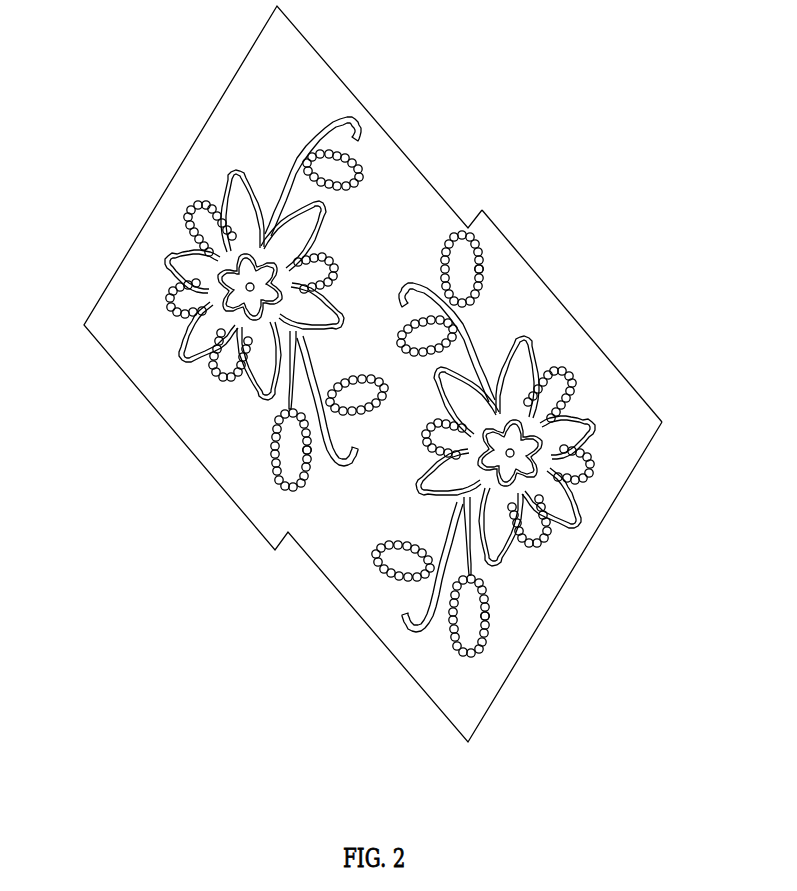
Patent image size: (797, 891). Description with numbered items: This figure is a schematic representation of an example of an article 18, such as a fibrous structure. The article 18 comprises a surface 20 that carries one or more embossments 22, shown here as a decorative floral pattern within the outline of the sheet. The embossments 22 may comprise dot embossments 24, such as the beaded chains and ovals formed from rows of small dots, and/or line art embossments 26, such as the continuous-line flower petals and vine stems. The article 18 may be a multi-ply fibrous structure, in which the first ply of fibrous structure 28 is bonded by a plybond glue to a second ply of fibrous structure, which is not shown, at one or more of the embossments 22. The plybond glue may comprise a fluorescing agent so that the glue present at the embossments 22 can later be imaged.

The article 18 is at (523, 67).
The surface 20 is at (407, 251).
The embossments 22 is at (535, 345).
The dot embossments 24 is at (273, 463).
The line art embossments 26 is at (187, 335).
The first ply of fibrous structure 28 is at (603, 363).